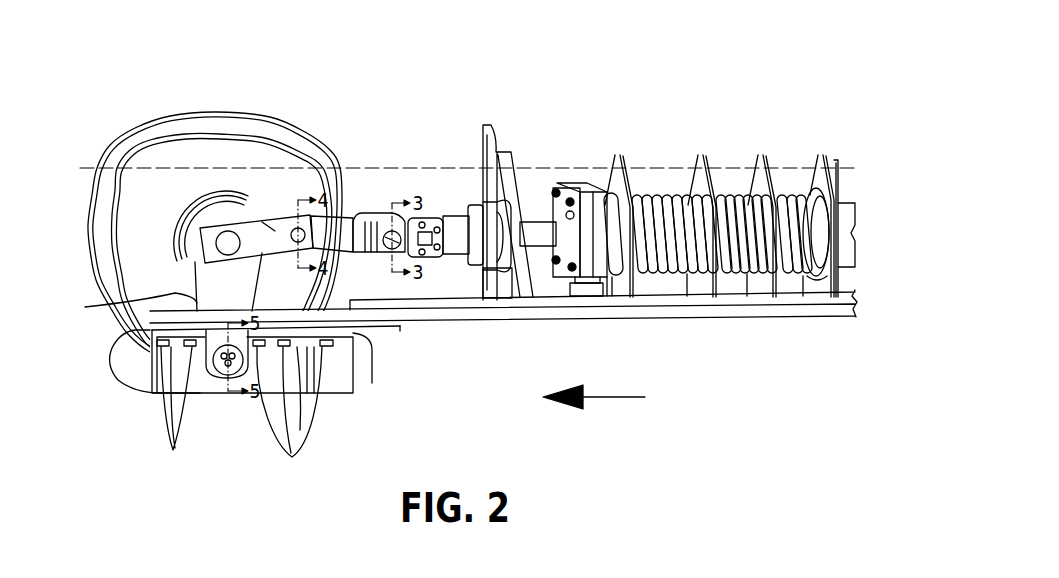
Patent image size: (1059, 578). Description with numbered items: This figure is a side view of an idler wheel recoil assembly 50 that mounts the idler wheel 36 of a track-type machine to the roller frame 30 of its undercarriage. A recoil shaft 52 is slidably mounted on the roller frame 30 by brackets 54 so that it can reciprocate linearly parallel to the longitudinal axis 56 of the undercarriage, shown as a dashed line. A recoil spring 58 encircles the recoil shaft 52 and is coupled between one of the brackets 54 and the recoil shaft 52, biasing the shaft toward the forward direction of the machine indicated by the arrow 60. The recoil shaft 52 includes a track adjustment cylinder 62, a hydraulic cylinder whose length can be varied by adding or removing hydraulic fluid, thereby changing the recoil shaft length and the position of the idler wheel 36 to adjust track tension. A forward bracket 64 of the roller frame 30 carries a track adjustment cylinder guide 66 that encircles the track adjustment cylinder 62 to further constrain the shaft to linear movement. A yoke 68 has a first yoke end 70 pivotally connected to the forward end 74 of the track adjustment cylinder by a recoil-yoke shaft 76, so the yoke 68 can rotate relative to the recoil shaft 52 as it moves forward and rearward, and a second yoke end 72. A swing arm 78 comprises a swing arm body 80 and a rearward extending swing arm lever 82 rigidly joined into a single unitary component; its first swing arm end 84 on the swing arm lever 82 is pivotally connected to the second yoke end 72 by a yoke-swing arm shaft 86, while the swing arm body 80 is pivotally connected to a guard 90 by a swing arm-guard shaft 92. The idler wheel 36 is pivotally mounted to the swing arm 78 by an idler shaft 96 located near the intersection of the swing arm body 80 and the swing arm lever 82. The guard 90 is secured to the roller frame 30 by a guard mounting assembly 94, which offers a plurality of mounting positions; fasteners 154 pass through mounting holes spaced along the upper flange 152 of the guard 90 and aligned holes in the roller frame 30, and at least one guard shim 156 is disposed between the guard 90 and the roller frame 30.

The roller frame 30 is at (792, 314).
The idler wheel 36 is at (146, 196).
The idler wheel recoil assembly 50 is at (781, 56).
The recoil shaft 52 is at (553, 234).
The brackets 54 is at (820, 155).
The longitudinal axis 56 is at (834, 168).
The recoil spring 58 is at (668, 262).
The arrow 60 is at (598, 397).
The track adjustment cylinder 62 is at (456, 216).
The forward bracket 64 is at (493, 124).
The track adjustment cylinder guide 66 is at (477, 205).
The yoke 68 is at (355, 212).
The first yoke end 70 is at (378, 218).
The second yoke end 72 is at (348, 216).
The forward end 74 is at (405, 218).
The recoil-yoke shaft 76 is at (392, 249).
The swing arm 78 is at (129, 305).
The swing arm body 80 is at (203, 288).
The swing arm lever 82 is at (228, 231).
The first swing arm end 84 is at (296, 228).
The yoke-swing arm shaft 86 is at (270, 228).
The guard 90 is at (335, 383).
The swing arm-guard shaft 92 is at (228, 378).
The guard mounting assembly 94 is at (392, 341).
The idler shaft 96 is at (208, 224).
The upper flange 152 is at (373, 352).
The fastener 154 is at (245, 410).
The guard shim 156 is at (118, 350).